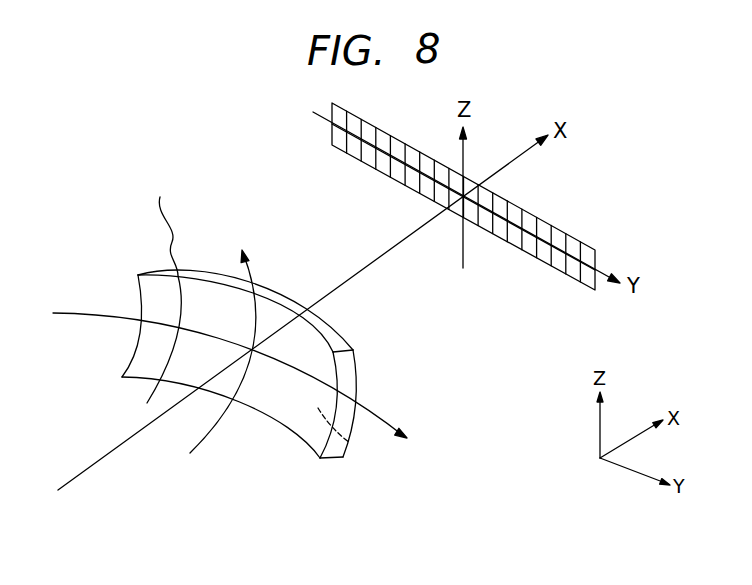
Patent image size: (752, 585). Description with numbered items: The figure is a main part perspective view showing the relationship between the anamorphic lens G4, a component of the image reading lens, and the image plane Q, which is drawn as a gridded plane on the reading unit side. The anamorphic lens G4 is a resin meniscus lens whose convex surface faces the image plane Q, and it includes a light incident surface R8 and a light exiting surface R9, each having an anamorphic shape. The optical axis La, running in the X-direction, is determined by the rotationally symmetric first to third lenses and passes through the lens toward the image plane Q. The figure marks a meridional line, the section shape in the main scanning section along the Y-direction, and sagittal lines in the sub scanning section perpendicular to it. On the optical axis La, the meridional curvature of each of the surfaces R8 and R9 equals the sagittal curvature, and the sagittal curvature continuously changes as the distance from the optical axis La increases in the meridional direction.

The image plane Q is at (332, 107).
The anamorphic lens G4 is at (291, 345).
The optical axis La is at (367, 267).
The light incident surface R8 is at (285, 407).
The light exiting surface R9 is at (310, 403).